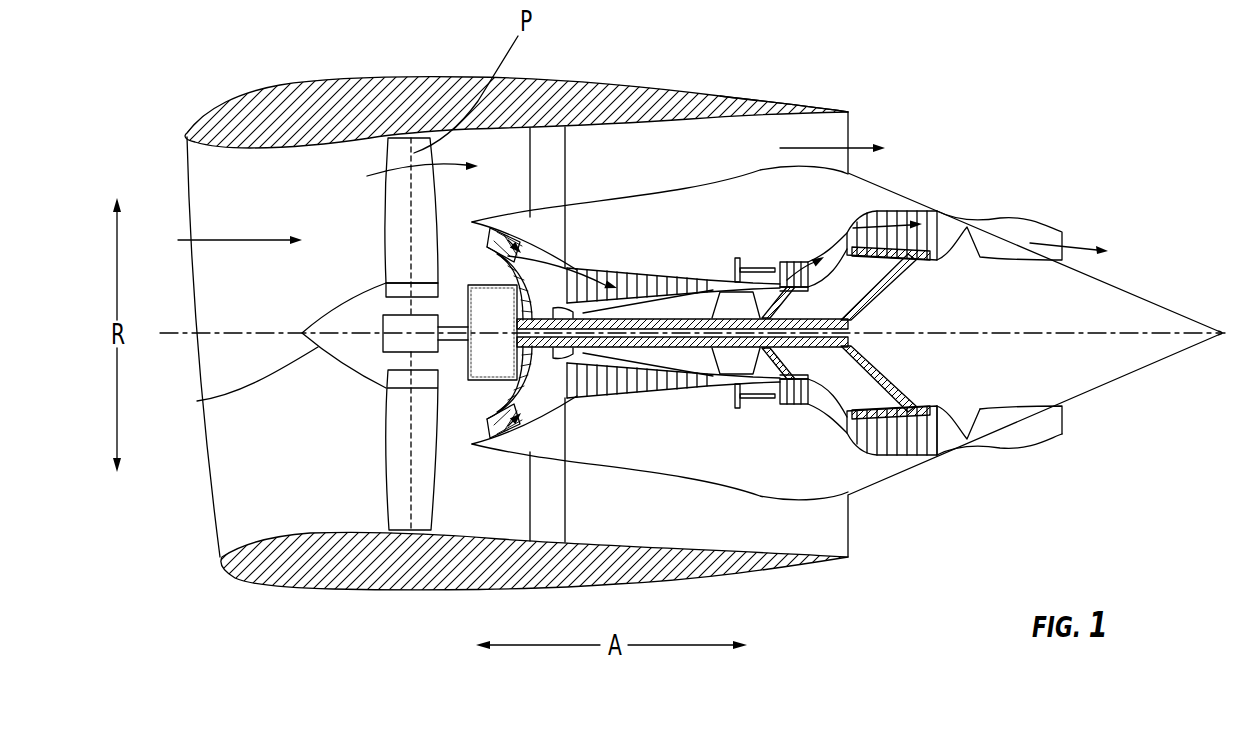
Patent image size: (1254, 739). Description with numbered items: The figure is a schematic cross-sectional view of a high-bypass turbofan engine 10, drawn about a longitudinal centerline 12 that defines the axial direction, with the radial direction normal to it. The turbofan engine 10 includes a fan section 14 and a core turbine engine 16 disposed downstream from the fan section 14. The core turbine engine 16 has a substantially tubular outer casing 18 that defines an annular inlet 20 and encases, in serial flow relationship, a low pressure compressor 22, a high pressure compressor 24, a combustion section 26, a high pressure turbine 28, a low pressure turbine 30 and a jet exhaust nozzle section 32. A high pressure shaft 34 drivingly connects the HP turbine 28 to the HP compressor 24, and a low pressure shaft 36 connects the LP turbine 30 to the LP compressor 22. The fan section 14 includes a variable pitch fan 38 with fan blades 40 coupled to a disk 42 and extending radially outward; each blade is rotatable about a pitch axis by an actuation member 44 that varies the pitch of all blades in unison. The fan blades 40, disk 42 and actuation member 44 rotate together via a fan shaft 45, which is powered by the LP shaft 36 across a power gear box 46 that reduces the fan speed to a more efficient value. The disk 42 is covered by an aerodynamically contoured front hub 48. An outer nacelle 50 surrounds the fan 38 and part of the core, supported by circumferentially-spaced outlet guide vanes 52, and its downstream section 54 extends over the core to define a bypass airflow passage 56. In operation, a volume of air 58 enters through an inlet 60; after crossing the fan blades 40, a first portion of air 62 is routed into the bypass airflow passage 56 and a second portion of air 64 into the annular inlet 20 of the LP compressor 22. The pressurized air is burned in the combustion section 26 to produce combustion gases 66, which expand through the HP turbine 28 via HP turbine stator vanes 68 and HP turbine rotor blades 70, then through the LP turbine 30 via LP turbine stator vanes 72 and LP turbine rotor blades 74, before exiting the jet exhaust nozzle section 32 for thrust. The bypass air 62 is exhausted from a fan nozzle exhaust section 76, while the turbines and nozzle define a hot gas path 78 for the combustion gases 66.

The turbofan engine 10 is at (988, 82).
The longitudinal centerline 12 is at (1005, 333).
The fan section 14 is at (345, 155).
The core turbine engine 16 is at (678, 215).
The outer casing 18 is at (713, 488).
The annular inlet 20 is at (475, 435).
The low pressure compressor 22 is at (513, 378).
The high pressure compressor 24 is at (592, 385).
The combustion section 26 is at (750, 405).
The high pressure turbine 28 is at (822, 402).
The low pressure turbine 30 is at (930, 465).
The jet exhaust nozzle section 32 is at (992, 453).
The high pressure shaft 34 is at (758, 309).
The low pressure shaft 36 is at (868, 306).
The variable pitch fan 38 is at (342, 390).
The fan blades 40 is at (383, 475).
The disk 42 is at (397, 289).
The actuation member 44 is at (383, 318).
The fan shaft 45 is at (452, 327).
The power gear box 46 is at (510, 296).
The front hub 48 is at (197, 401).
The outer nacelle 50 is at (430, 591).
The outlet guide vanes 52 is at (565, 157).
The downstream section 54 is at (795, 101).
The bypass airflow passage 56 is at (724, 167).
The volume of air 58 is at (235, 238).
The inlet 60 is at (215, 537).
The first portion of air 62 is at (350, 203).
The second portion of air 64 is at (458, 236).
The combustion gases 66 is at (913, 165).
The HP turbine stator vanes 68 is at (770, 406).
The HP turbine rotor blades 70 is at (848, 368).
The LP turbine stator vanes 72 is at (857, 440).
The LP turbine rotor blades 74 is at (867, 444).
The fan nozzle exhaust section 76 is at (840, 134).
The hot gas path 78 is at (832, 238).